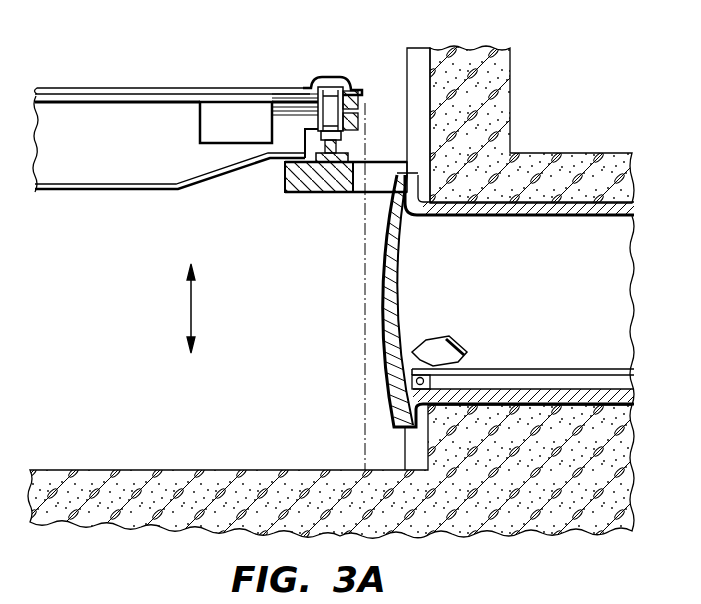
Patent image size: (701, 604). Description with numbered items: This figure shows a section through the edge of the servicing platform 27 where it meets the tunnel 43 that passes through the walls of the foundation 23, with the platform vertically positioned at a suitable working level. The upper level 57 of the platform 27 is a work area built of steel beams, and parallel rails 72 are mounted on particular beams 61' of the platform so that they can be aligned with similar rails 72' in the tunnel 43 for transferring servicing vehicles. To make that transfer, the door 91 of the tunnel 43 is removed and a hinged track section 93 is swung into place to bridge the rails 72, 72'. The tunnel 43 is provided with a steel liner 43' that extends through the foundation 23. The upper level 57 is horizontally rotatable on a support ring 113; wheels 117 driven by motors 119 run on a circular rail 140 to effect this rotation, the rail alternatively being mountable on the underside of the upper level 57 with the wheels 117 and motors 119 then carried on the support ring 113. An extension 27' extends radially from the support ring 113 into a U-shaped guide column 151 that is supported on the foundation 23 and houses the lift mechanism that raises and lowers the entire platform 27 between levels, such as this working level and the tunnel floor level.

The servicing platform 27 is at (54, 109).
The upper level 57 is at (104, 84).
The parallel rails 72 is at (173, 70).
The beams 61' is at (176, 162).
The motor 119 is at (220, 108).
The wheels 117 is at (317, 120).
The circular rail 140 is at (333, 147).
The support ring 113 is at (285, 180).
The extension portion 27' is at (346, 196).
The guide column 151 is at (418, 55).
The foundation 23 is at (498, 73).
The steel liner 43' is at (515, 214).
The tunnel 43 is at (572, 310).
The rails 72' is at (523, 365).
The hinged track section 93 is at (430, 337).
The door 91 is at (383, 285).